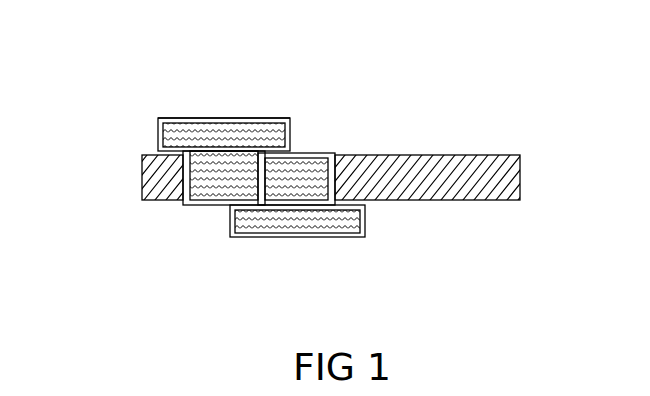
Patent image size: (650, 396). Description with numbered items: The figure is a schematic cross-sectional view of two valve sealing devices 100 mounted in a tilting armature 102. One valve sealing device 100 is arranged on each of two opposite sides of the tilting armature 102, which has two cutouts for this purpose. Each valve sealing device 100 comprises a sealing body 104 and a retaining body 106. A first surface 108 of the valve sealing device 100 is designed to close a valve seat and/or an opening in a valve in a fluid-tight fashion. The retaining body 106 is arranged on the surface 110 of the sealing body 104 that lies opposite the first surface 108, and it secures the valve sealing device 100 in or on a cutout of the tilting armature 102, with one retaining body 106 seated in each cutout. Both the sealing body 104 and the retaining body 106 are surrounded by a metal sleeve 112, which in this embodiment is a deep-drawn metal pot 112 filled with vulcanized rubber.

The valve sealing device 100 is at (304, 155).
The tilting armature 102 is at (455, 203).
The sealing body 104 is at (167, 131).
The retaining body 106 is at (225, 178).
The first surface 108 is at (229, 116).
The surface 110 is at (207, 138).
The metal sleeve 112 is at (325, 167).